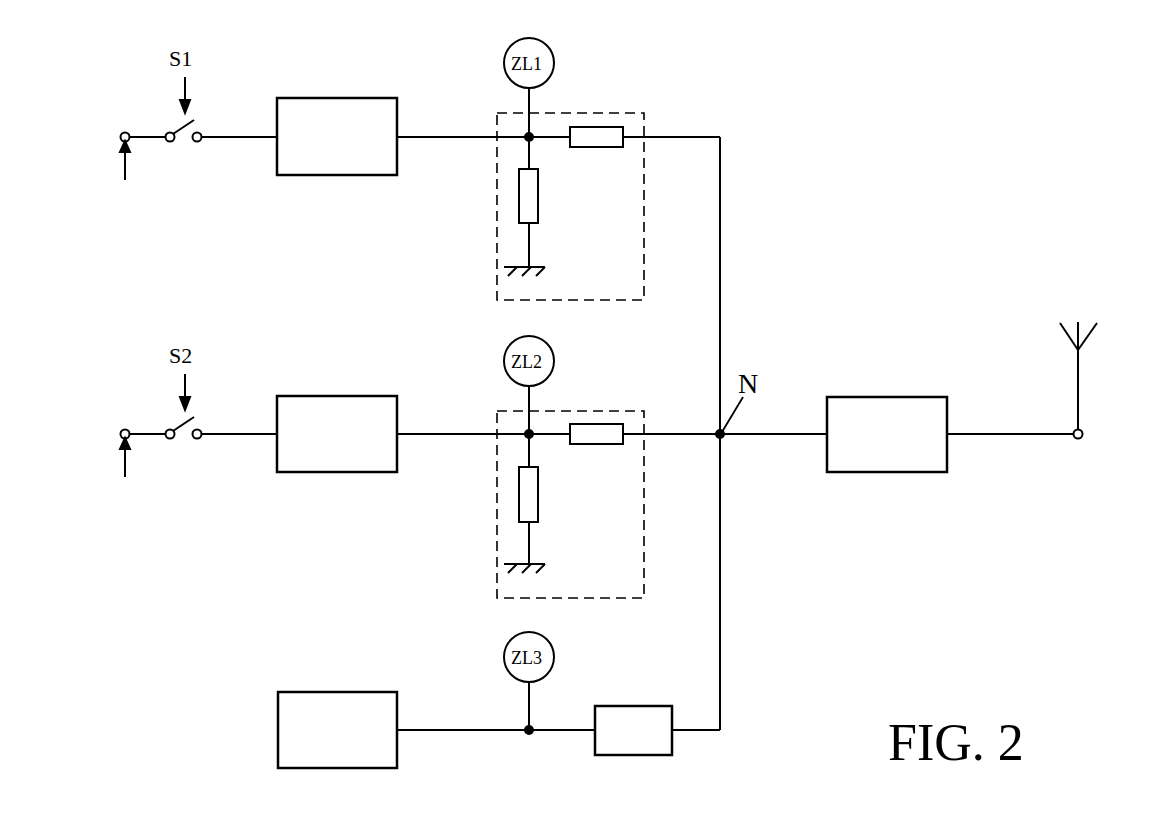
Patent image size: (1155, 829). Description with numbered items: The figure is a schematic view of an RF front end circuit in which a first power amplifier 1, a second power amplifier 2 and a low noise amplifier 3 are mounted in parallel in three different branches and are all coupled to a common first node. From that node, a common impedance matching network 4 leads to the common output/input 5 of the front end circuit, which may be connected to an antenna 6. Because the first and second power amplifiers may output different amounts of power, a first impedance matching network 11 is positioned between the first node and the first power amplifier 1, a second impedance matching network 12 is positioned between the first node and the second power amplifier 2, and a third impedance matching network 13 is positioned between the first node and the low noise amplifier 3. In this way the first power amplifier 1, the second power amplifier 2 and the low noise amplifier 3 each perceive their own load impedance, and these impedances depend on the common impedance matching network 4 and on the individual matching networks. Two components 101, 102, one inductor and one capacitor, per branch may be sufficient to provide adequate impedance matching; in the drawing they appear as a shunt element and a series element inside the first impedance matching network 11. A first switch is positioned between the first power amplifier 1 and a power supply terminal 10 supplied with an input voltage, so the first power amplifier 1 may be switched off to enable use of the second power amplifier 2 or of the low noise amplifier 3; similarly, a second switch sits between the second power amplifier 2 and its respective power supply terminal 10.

The first PA 1 is at (347, 97).
The second PA 2 is at (347, 395).
The LNA 3 is at (347, 692).
The common impedance matching network 4 is at (900, 395).
The common output/input 5 is at (1083, 438).
The antenna 6 is at (1080, 372).
The power supply terminal 10 is at (122, 131).
The first impedance matching network 11 is at (538, 174).
The second impedance matching network 12 is at (615, 410).
The third impedance matching network 13 is at (633, 755).
The component 101 is at (518, 198).
The component 102 is at (588, 148).